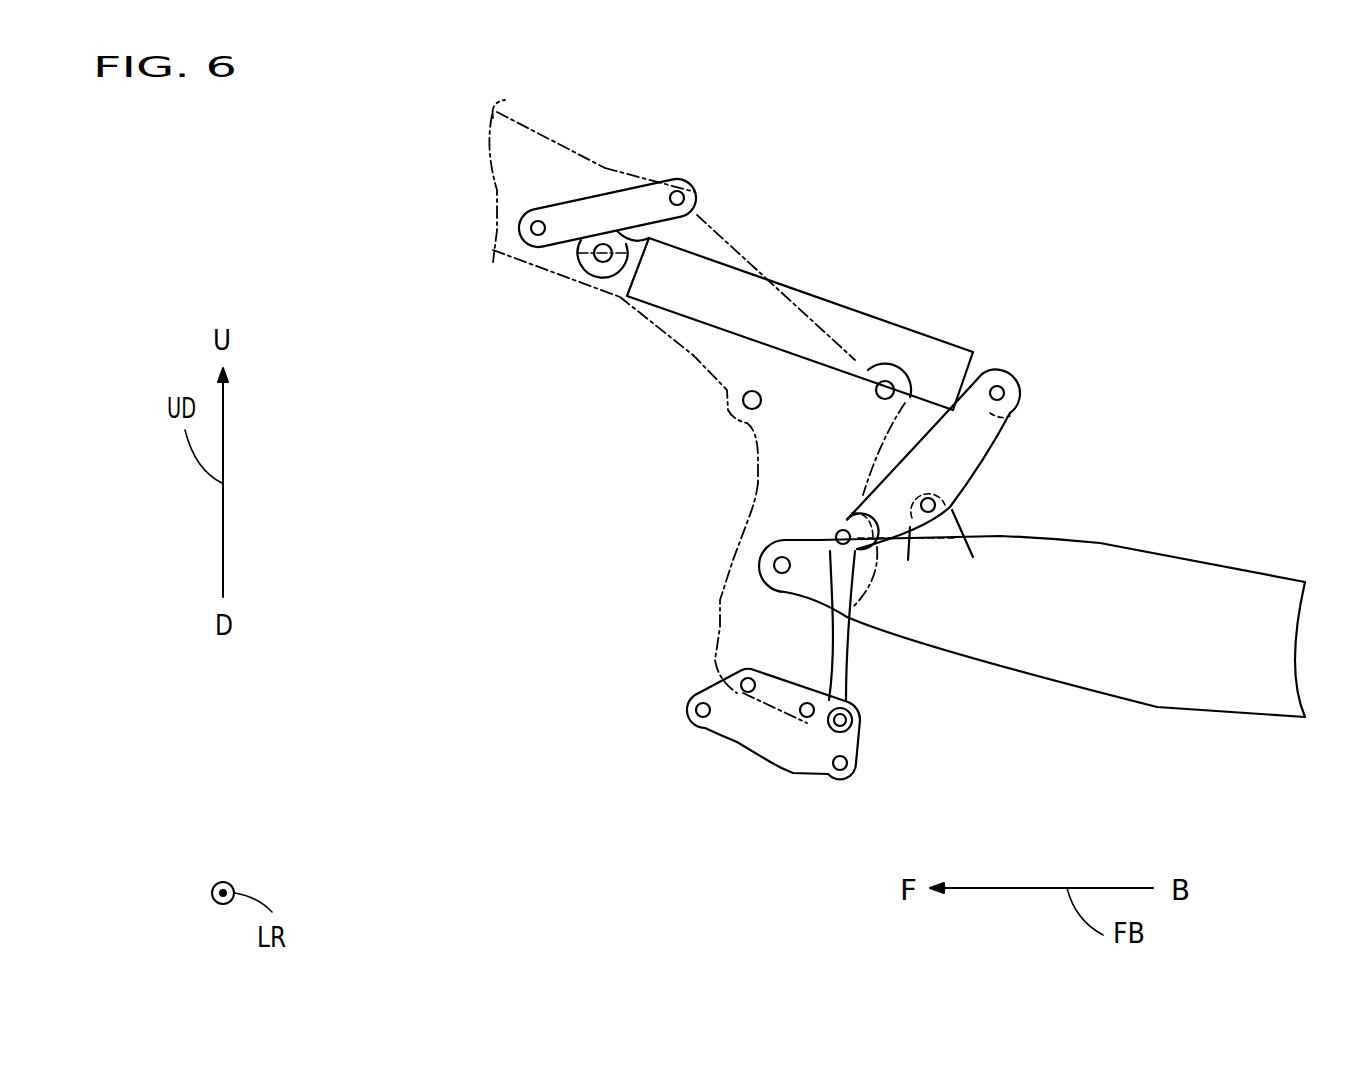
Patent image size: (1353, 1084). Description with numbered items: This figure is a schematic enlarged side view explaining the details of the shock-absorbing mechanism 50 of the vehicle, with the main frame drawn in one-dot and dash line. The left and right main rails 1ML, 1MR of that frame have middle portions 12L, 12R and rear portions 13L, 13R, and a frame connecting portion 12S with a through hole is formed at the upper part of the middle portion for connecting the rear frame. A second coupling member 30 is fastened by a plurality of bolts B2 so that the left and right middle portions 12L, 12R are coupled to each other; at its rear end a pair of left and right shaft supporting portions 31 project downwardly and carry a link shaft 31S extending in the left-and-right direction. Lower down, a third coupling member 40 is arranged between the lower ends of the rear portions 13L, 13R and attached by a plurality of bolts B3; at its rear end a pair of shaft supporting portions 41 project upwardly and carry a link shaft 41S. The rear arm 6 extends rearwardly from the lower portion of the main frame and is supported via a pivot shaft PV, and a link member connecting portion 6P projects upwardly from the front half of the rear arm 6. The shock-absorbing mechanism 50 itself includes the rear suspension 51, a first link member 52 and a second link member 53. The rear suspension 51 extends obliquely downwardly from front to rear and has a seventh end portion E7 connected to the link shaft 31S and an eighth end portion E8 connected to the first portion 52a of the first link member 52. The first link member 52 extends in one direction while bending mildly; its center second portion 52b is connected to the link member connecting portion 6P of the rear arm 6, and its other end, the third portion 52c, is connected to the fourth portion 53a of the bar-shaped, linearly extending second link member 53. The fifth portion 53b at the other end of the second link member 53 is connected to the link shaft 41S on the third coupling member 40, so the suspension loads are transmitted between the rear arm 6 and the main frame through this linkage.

The left middle portion 12L is at (463, 196).
The right middle portion 12R is at (503, 162).
The frame connecting portion 12S is at (640, 180).
The second coupling member 30 is at (580, 210).
The bolts B2 is at (677, 198).
The shaft supporting portions 31 is at (560, 258).
The link shaft 31S is at (700, 233).
The seventh end portion E7 is at (610, 278).
The shock-absorbing mechanism 50 is at (918, 288).
The rear suspension 51 is at (843, 327).
The eighth end portion E8 is at (975, 378).
The first link member 52 is at (985, 438).
The first portion 52a is at (1015, 381).
The second portion 52b is at (936, 505).
The third portion 52c is at (842, 522).
The second link member 53 is at (835, 623).
The fourth portion 53a is at (855, 557).
The fifth portion 53b is at (842, 695).
The rear arm 6 is at (1193, 588).
The link member connecting portion 6P is at (952, 530).
The pivot shaft PV is at (774, 565).
The left main rail 1ML is at (634, 390).
The right main rail 1MR is at (727, 467).
The left rear portion 13L is at (635, 588).
The right rear portion 13R is at (737, 600).
The third coupling member 40 is at (755, 742).
The bolts B3 is at (745, 695).
The shaft supporting portions 41 is at (858, 730).
The link shaft 41S is at (855, 717).